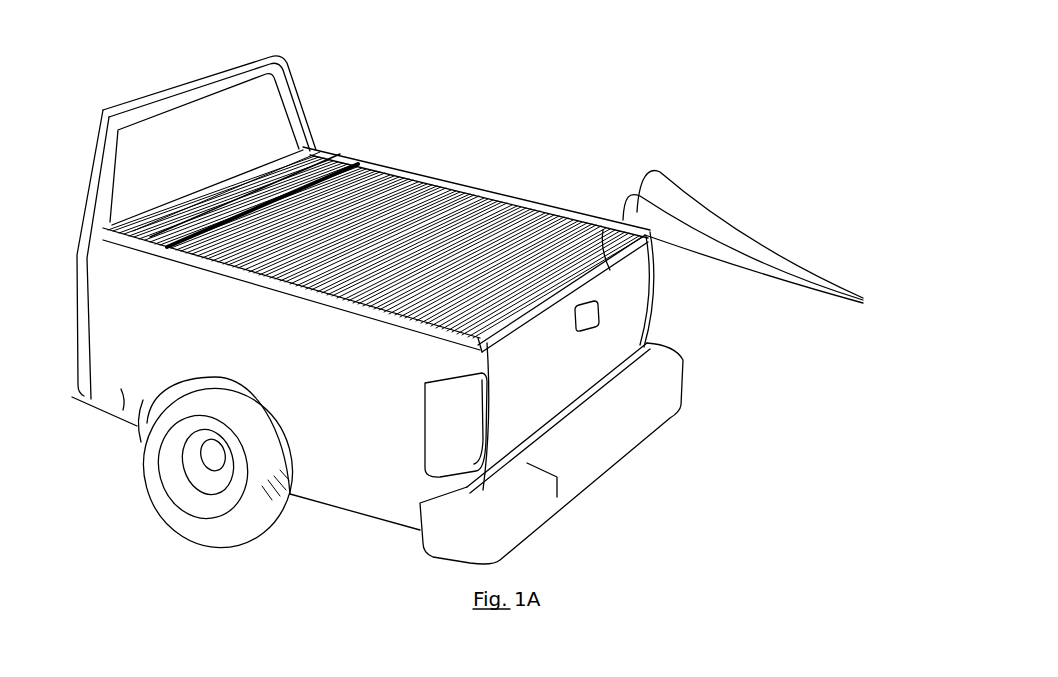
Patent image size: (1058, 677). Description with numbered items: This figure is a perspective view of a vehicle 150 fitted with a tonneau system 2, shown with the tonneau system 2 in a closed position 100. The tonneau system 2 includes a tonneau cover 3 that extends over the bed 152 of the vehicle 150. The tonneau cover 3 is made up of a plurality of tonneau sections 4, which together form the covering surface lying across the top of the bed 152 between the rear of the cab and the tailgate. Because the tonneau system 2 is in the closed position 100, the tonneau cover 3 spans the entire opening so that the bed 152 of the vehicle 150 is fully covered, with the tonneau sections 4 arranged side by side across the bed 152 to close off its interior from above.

The closed position 100 is at (498, 284).
The vehicle 150 is at (233, 300).
The bed 152 is at (395, 178).
The tonneau system 2 is at (648, 90).
The tonneau cover 3 is at (547, 167).
The tonneau sections 4 is at (751, 243).